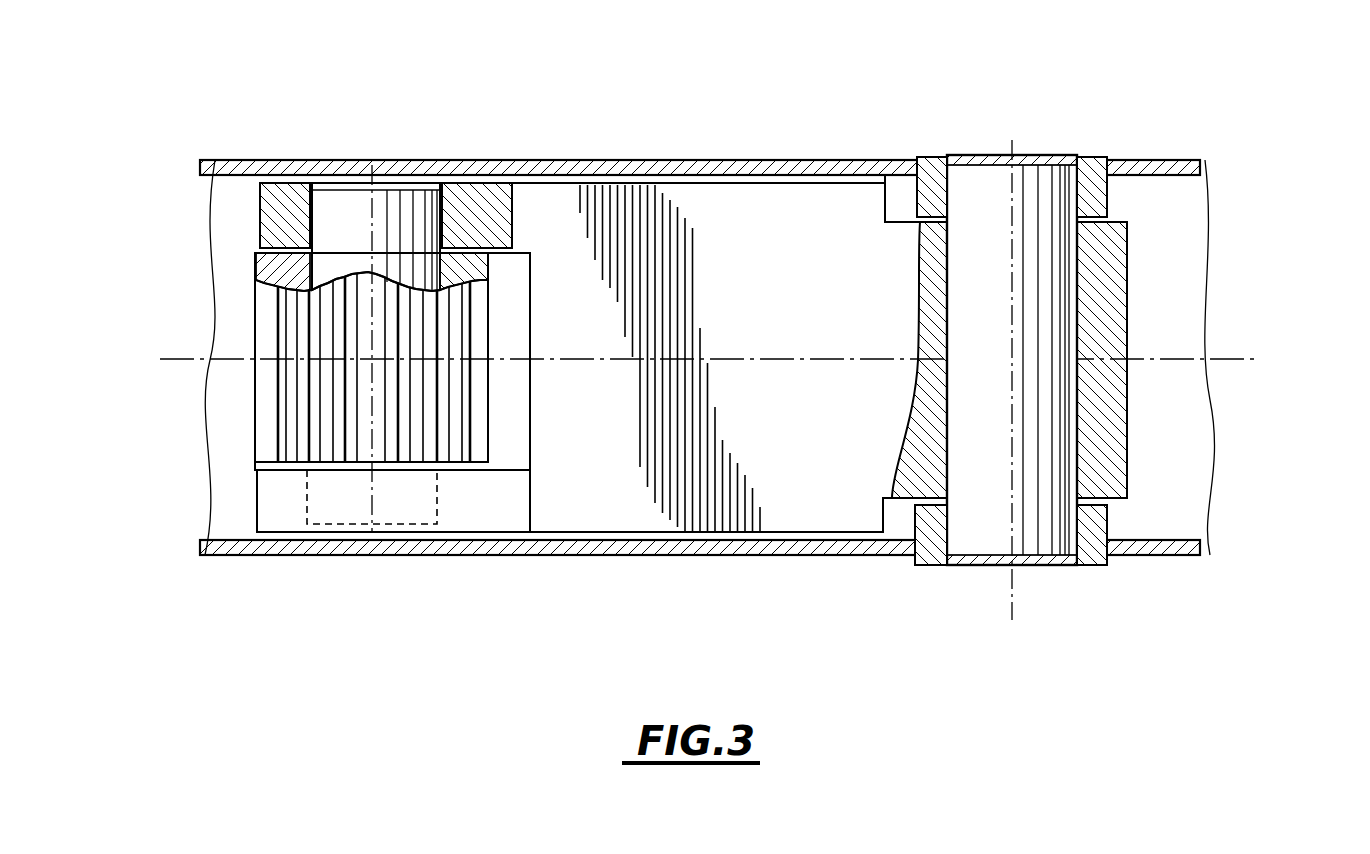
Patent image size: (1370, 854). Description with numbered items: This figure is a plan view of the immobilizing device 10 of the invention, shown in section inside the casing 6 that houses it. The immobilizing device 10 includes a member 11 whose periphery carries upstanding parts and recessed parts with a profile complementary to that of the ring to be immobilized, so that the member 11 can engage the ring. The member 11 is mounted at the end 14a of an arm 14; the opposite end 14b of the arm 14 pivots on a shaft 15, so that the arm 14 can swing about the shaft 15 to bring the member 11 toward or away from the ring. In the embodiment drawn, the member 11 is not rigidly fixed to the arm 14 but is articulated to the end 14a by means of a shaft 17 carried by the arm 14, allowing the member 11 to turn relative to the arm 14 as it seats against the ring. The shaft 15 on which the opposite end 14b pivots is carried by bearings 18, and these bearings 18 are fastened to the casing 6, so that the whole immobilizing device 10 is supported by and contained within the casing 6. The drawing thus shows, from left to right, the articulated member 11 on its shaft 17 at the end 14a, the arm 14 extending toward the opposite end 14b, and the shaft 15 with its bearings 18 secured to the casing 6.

The casing 6 is at (790, 557).
The immobilizing device 10 is at (537, 538).
The member 11 is at (262, 408).
The arm 14 is at (785, 232).
The end of the arm 14a is at (478, 208).
The opposite end of the arm 14b is at (1110, 437).
The shaft 15 is at (975, 528).
The shaft 17 is at (347, 215).
The bearings 18 is at (928, 200).